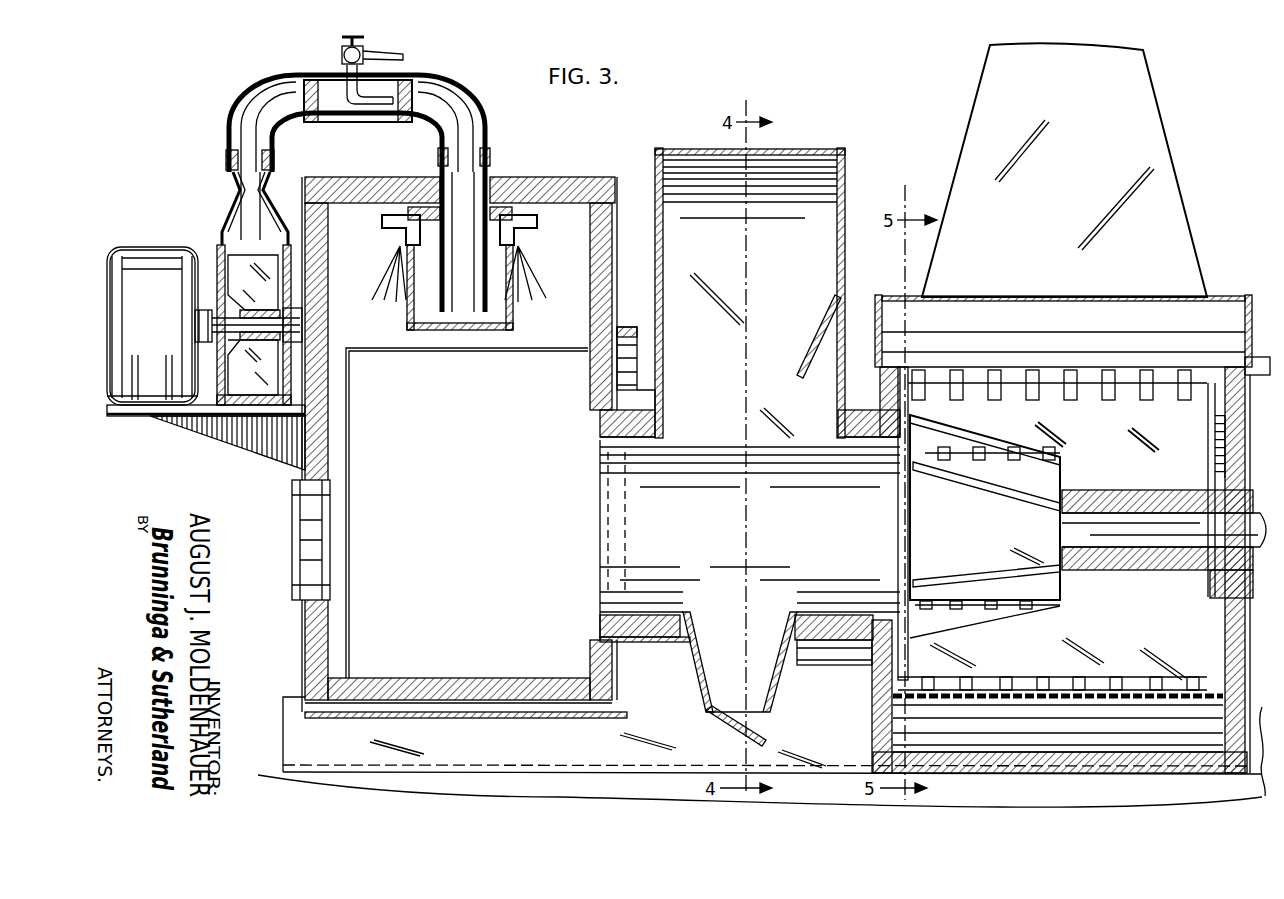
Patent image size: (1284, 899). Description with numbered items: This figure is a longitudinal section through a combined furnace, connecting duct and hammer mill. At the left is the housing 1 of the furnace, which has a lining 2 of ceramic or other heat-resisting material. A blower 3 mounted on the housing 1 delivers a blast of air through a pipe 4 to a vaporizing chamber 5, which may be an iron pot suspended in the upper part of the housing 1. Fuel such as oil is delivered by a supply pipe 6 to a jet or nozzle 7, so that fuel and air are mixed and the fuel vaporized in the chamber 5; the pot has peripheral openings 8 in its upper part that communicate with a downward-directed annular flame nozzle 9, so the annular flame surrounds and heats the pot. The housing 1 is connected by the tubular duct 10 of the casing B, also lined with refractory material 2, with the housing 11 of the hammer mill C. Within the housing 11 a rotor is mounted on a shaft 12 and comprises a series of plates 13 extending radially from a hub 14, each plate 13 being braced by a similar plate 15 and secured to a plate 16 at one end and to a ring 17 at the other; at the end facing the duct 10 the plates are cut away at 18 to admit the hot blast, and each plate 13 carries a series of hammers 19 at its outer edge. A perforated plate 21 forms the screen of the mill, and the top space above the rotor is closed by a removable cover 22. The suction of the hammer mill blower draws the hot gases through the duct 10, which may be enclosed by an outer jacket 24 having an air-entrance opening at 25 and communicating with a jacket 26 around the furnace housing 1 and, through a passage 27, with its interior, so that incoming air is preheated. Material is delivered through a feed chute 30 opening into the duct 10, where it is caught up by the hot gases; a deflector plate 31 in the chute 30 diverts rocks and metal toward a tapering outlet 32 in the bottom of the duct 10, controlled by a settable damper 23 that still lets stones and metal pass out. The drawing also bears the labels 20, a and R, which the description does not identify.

The furnace housing 1 is at (572, 180).
The lining 2 is at (590, 303).
The blower 3 is at (232, 266).
The pipe 4 is at (250, 102).
The vaporizing chamber 5 is at (420, 287).
The supply pipe 6 is at (385, 54).
The jet or nozzle 7 is at (378, 104).
The peripheral openings 8 is at (504, 246).
The annular flame nozzle 9 is at (390, 245).
The tubular duct 10 is at (682, 475).
The hammer mill housing 11 is at (1253, 424).
The shaft 12 is at (1146, 548).
The plates 13 is at (1062, 466).
The hub 14 is at (1142, 490).
The bracing plate 15 is at (1008, 500).
The end plate 16 is at (1213, 424).
The ring 17 is at (910, 410).
The cut-away portion 18 is at (948, 430).
The hammers 19 is at (1173, 400).
The hood 20 is at (1162, 108).
The perforated plate 21 is at (994, 700).
The removable cover 22 is at (1222, 297).
The settable damper 23 is at (716, 730).
The outer jacket 24 is at (815, 665).
The air-entrance opening 25 is at (862, 650).
The furnace jacket 26 is at (630, 325).
The passage 27 is at (348, 540).
The feed chute 30 is at (690, 175).
The deflector plate 31 is at (812, 337).
The tapering outlet 32 is at (763, 635).
The elbow a is at (488, 116).
The air flow arrow R is at (292, 458).
The casing B is at (666, 690).
The hammer mill C is at (1040, 783).